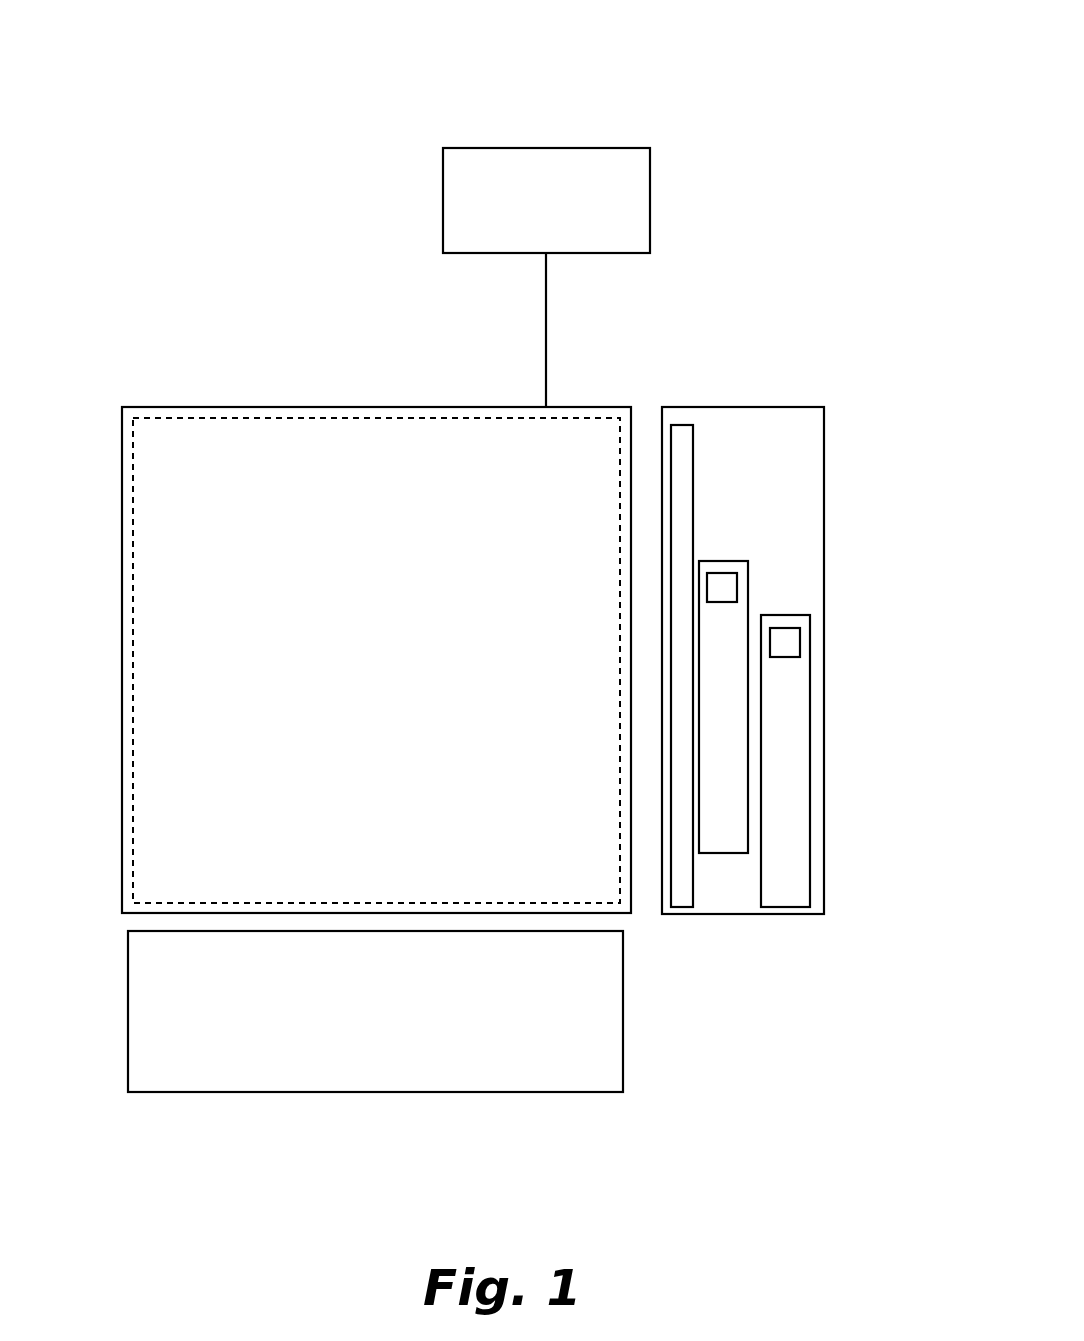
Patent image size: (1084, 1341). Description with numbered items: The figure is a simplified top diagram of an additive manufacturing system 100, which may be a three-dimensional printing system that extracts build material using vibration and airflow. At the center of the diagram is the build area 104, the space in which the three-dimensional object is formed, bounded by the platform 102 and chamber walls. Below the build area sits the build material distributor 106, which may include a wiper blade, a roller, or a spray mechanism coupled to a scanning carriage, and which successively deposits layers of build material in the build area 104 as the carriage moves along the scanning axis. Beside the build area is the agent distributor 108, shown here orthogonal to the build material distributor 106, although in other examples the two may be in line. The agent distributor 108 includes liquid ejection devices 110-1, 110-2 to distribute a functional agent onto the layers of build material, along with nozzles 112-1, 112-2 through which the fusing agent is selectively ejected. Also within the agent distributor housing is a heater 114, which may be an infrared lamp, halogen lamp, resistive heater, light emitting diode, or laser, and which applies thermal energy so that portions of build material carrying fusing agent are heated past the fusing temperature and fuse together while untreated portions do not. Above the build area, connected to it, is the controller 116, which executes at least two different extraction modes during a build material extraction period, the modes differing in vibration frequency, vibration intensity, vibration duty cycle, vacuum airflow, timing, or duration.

The additive manufacturing system 100 is at (252, 80).
The platform 102 is at (122, 770).
The build area 104 is at (133, 660).
The build material distributor 106 is at (600, 985).
The agent distributor 108 is at (773, 444).
The liquid ejection device 110-1 is at (737, 610).
The liquid ejection device 110-2 is at (793, 675).
The nozzle 112-1 is at (727, 589).
The nozzle 112-2 is at (787, 651).
The heater 114 is at (676, 437).
The controller 116 is at (546, 200).